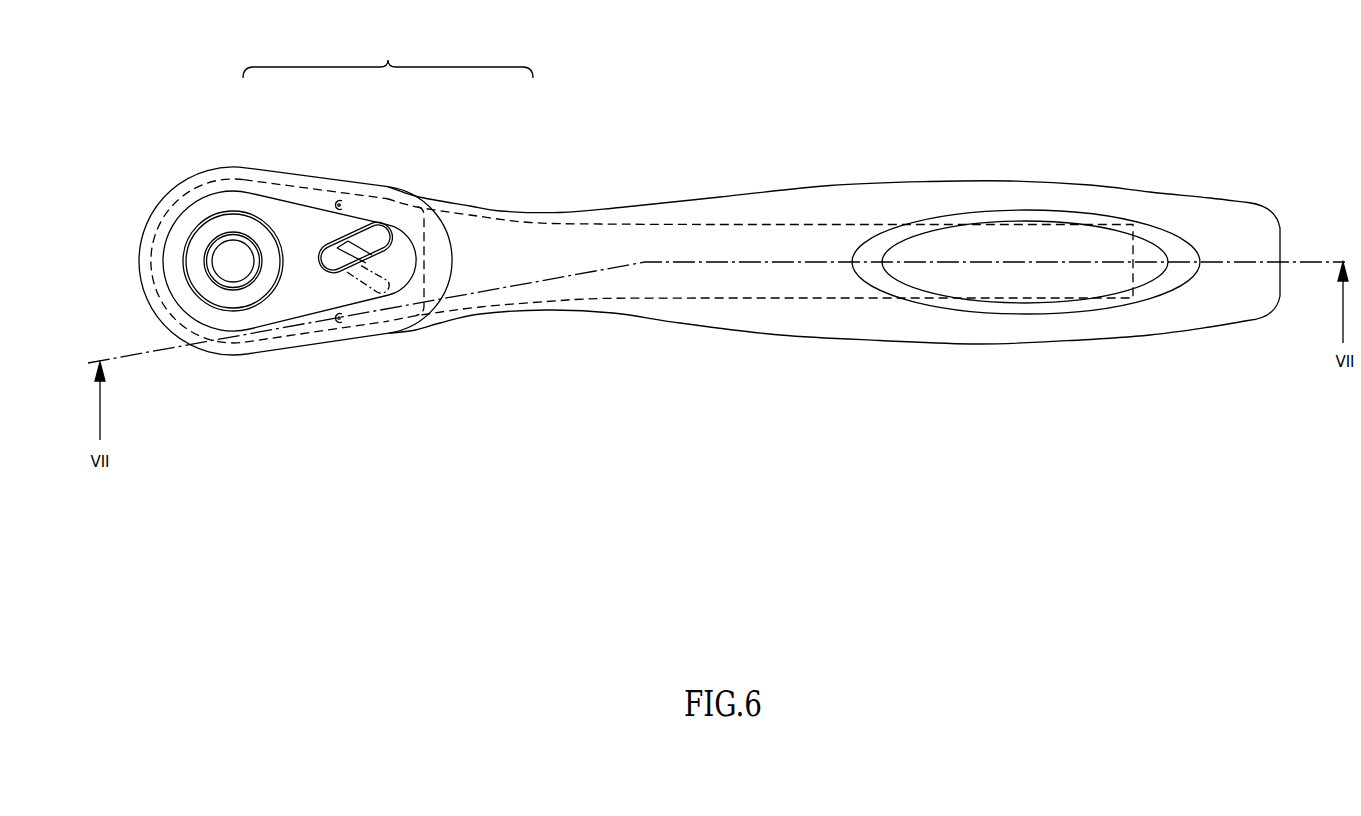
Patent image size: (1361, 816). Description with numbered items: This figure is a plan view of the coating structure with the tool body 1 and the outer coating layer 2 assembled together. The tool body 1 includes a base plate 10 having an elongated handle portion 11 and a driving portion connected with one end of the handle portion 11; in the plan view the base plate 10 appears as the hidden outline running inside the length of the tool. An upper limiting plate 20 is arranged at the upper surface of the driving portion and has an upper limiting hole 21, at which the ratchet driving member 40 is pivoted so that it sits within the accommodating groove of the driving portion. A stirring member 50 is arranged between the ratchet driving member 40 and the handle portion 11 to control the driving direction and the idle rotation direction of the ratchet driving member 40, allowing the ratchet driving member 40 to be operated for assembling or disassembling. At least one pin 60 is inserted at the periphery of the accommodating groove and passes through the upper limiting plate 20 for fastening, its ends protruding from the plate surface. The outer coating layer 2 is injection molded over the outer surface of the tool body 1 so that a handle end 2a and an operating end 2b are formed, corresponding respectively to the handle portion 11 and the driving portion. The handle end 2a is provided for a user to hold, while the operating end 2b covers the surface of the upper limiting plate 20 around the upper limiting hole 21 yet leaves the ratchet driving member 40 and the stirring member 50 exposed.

The tool body 1 is at (388, 57).
The outer coating layer 2 is at (860, 473).
The handle end 2a is at (897, 330).
The operating end 2b is at (392, 330).
The base plate 10 is at (502, 200).
The handle portion 11 is at (753, 225).
The upper limiting plate 20 is at (283, 217).
The upper limiting hole 21 is at (186, 246).
The ratchet driving member 40 is at (218, 228).
The stirring member 50 is at (368, 237).
The pin 60 is at (342, 203).